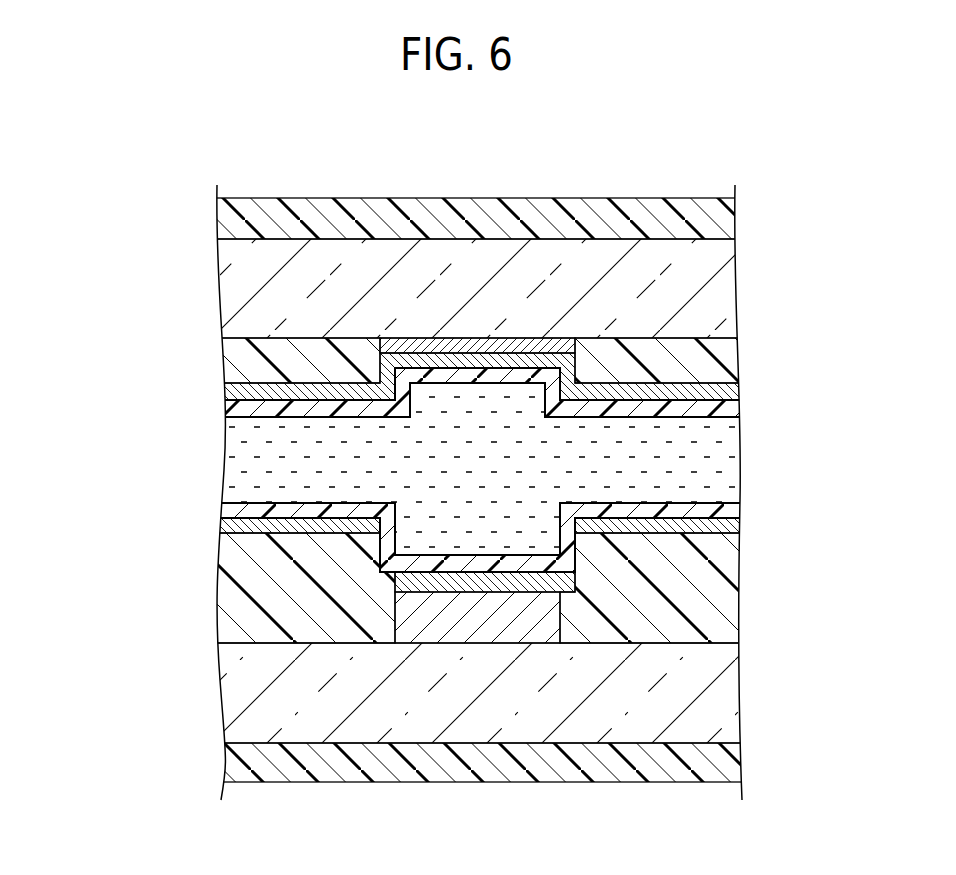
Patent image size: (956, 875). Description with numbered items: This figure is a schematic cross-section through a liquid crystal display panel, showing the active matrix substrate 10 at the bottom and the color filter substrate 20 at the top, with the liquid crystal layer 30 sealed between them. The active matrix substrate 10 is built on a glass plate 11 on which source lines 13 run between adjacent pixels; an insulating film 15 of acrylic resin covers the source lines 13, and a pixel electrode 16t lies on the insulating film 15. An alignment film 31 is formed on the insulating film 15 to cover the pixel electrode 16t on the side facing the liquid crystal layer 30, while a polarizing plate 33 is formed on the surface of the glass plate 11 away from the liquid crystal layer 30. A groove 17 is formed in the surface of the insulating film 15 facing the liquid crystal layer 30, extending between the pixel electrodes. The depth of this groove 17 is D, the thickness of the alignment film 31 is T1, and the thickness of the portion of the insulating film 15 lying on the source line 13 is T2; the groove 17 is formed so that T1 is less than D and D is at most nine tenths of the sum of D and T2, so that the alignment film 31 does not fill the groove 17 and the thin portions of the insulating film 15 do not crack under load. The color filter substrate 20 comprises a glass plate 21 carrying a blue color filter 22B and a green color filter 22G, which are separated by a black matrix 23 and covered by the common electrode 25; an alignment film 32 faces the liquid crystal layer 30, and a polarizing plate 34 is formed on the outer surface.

The active matrix substrate 10 is at (122, 530).
The glass plate 11 is at (228, 705).
The source line 13 is at (446, 631).
The insulating film 15 is at (225, 588).
The pixel electrode (transparent conductive film) 16t is at (225, 526).
The groove 17 is at (568, 553).
The color filter substrate 20 is at (58, 245).
The glass plate 21 is at (217, 280).
The blue color filter 22B is at (222, 353).
The green color filter 22G is at (733, 357).
The black matrix 23 is at (403, 347).
The common electrode 25 is at (222, 390).
The liquid crystal layer 30 is at (225, 462).
The alignment film 31 is at (225, 510).
The alignment film 32 is at (225, 409).
The polarizing plate 33 is at (225, 760).
The polarizing plate 34 is at (217, 222).
The depth of the groove D is at (350, 533).
The thickness of the alignment film T1 is at (740, 503).
The thickness of the insulating film portions on the source lines T2 is at (588, 572).